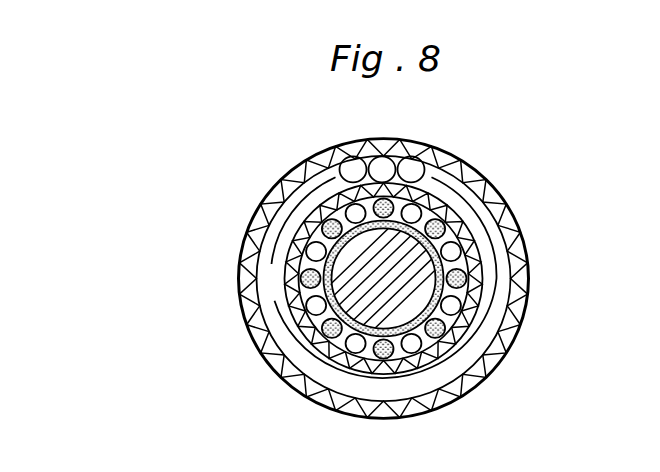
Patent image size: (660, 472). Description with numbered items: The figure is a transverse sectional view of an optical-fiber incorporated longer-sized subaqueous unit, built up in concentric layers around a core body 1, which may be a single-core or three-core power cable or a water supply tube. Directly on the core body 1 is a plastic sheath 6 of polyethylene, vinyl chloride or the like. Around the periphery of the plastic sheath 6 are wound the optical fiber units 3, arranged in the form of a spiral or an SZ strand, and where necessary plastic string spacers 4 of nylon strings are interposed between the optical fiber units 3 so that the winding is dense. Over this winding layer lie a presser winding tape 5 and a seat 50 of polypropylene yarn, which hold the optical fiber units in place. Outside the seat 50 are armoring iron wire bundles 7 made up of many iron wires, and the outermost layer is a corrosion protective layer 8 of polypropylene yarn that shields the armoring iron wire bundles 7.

The core body 1 is at (413, 256).
The optical fiber units 3 is at (477, 321).
The plastic string spacers 4 is at (449, 334).
The presser winding tape 5 is at (330, 210).
The seat 50 is at (276, 262).
The plastic sheath 6 is at (493, 294).
The armoring iron wire bundles 7 is at (421, 160).
The corrosion protective layer 8 is at (257, 333).